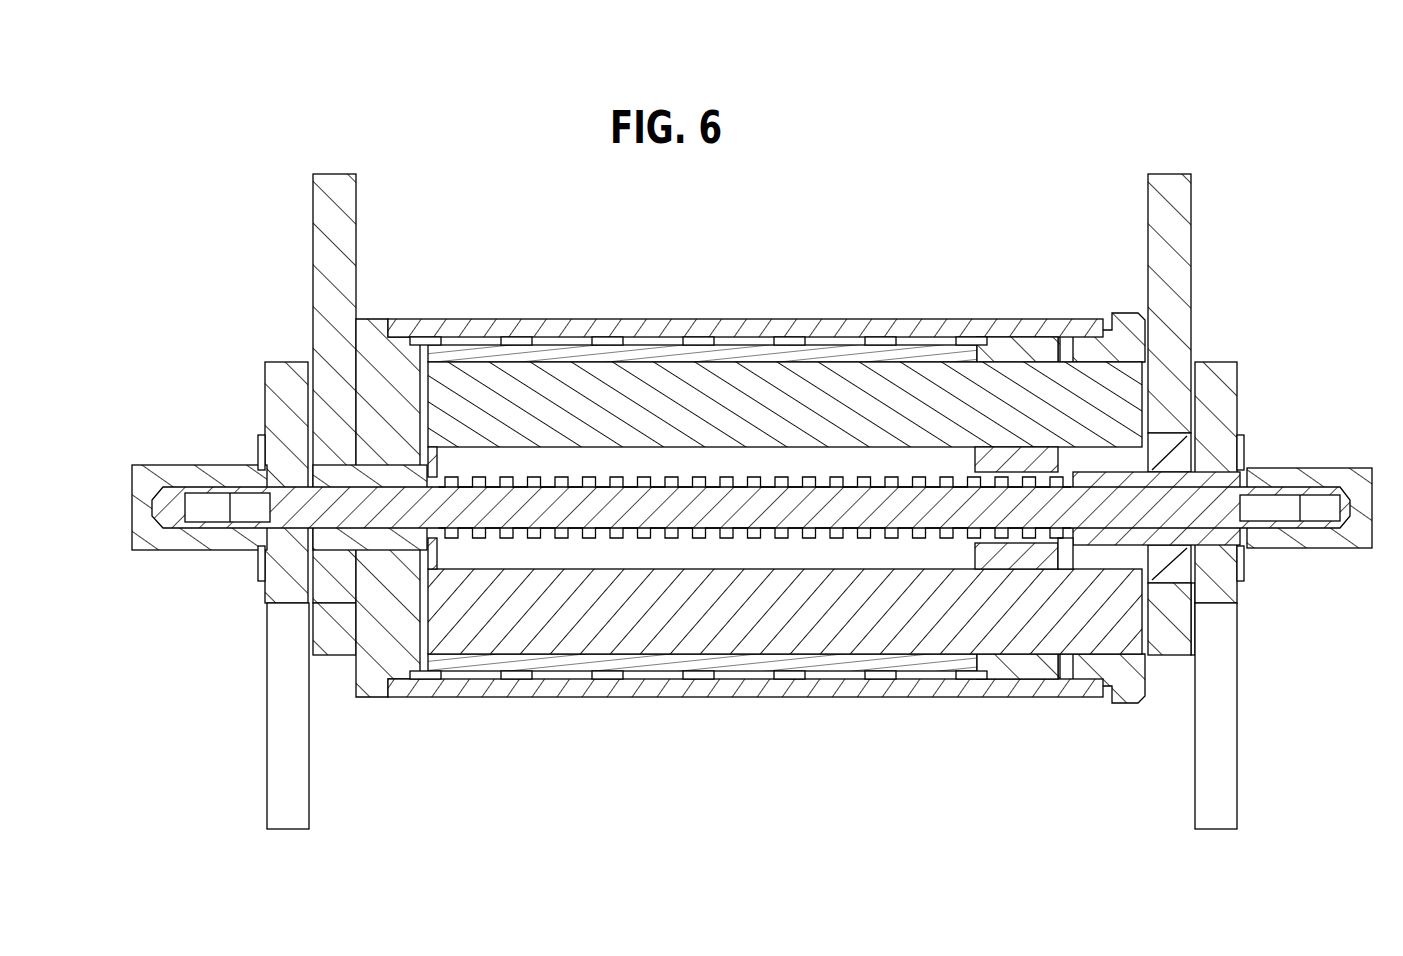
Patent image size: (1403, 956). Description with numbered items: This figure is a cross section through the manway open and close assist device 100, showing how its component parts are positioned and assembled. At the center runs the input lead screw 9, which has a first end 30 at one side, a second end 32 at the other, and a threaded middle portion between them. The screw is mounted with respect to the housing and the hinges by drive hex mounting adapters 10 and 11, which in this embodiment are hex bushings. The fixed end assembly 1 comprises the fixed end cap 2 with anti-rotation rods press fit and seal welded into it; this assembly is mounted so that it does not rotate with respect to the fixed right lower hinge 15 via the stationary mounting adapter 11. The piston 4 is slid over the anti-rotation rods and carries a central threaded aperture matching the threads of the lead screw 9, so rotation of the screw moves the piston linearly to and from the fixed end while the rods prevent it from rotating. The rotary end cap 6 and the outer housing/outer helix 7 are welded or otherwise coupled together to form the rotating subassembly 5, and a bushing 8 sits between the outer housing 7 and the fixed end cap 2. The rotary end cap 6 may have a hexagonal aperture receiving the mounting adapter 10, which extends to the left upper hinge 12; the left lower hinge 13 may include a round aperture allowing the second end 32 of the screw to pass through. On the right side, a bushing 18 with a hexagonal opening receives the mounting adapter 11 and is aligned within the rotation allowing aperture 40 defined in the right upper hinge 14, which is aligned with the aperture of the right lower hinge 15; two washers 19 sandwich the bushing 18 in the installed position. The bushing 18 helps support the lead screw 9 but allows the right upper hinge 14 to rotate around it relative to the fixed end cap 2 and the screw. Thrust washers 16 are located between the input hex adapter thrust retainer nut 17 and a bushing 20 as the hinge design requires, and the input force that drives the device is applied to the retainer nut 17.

The manway open and close assist device 100 is at (983, 145).
The fixed end assembly 1 is at (815, 640).
The fixed end cap 2 is at (1120, 316).
The piston 4 is at (985, 318).
The rotating subassembly 5 is at (712, 290).
The rotary end cap 6 is at (372, 320).
The outer housing/outer helix 7 is at (450, 320).
The bushing 8 is at (1105, 318).
The input lead screw 9 is at (528, 478).
The drive hex mounting adapter 10 is at (332, 652).
The drive hex mounting adapter 11 is at (1105, 560).
The left upper hinge 12 is at (330, 173).
The left lower hinge 13 is at (267, 362).
The right upper hinge 14 is at (1168, 190).
The right lower hinge 15 is at (1205, 362).
The thrust washers 16 is at (262, 440).
The input hex adapter thrust retainer nut 17 is at (175, 465).
The bushing 18 is at (1165, 600).
The washers 19 is at (1135, 700).
The bushing 20 is at (300, 600).
The first end 30 is at (1310, 521).
The second end 32 is at (170, 522).
The rotation allowing aperture 40 is at (1178, 440).